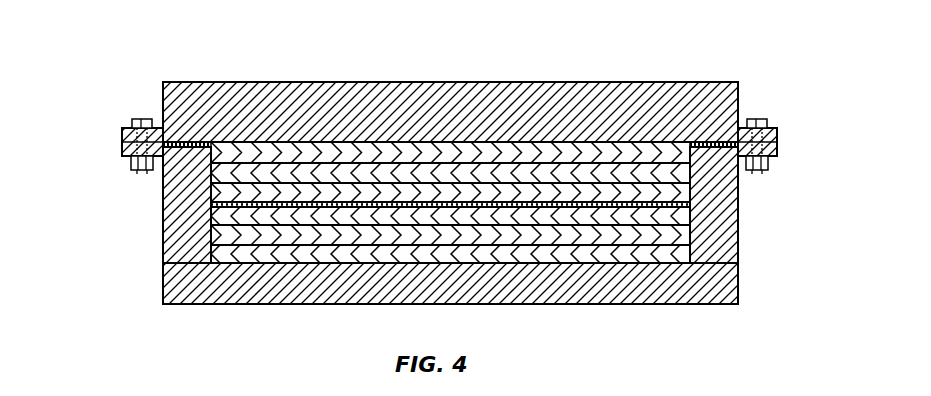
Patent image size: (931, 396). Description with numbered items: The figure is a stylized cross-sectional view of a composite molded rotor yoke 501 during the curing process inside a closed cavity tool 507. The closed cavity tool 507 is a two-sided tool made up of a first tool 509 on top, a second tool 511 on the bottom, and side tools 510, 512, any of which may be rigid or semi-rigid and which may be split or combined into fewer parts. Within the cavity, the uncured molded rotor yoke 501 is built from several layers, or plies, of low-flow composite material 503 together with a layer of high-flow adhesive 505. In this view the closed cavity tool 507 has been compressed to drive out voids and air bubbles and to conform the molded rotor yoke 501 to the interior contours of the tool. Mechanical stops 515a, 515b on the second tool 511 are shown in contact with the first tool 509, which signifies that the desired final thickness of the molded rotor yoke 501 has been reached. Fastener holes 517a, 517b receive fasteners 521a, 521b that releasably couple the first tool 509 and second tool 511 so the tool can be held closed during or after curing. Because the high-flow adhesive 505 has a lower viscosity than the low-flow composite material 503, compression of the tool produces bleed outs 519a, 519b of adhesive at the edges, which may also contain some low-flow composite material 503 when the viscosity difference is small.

The composite molded rotor yoke 501 is at (477, 242).
The low-flow composite material 503 is at (683, 168).
The high-flow adhesive 505 is at (205, 207).
The closed cavity tool 507 is at (453, 76).
The first tool 509 is at (568, 100).
The side tool 510 is at (163, 256).
The second tool 511 is at (688, 304).
The side tool 512 is at (713, 226).
The stop 515a is at (127, 154).
The stop 515b is at (769, 160).
The fastener hole 517a is at (138, 140).
The fastener hole 517b is at (762, 136).
The bleed out 519a is at (193, 147).
The bleed out 519b is at (715, 143).
The fastener 521a is at (135, 118).
The fastener 521b is at (757, 118).